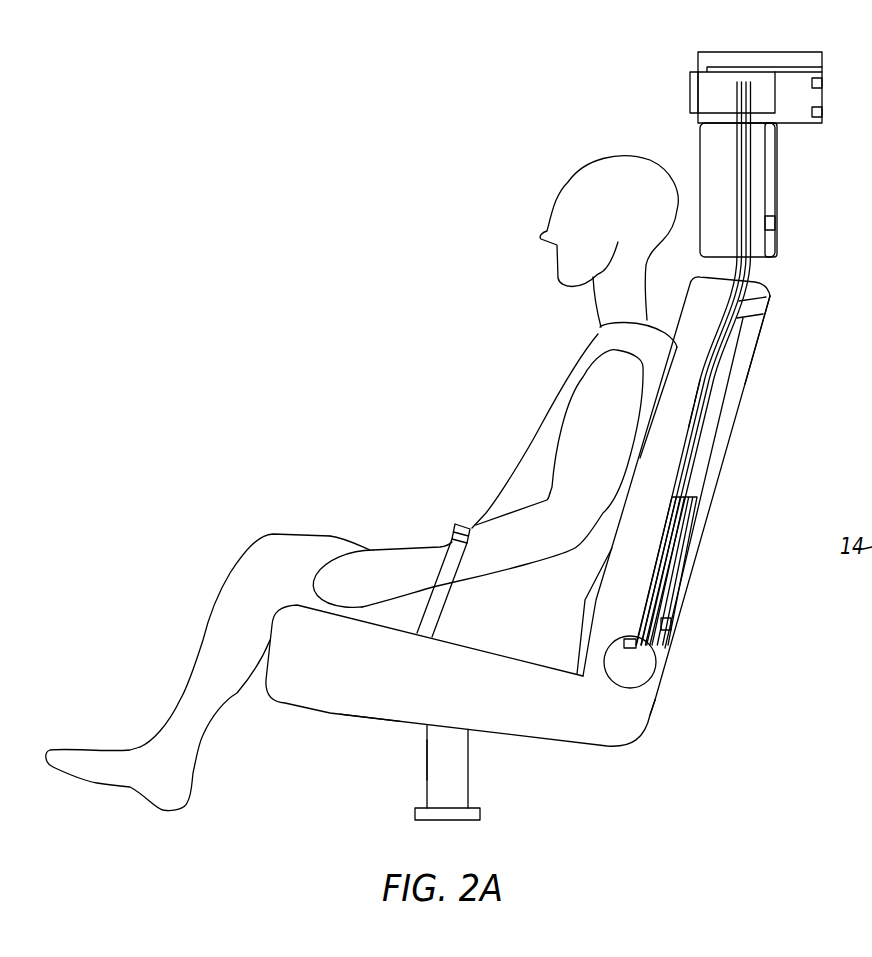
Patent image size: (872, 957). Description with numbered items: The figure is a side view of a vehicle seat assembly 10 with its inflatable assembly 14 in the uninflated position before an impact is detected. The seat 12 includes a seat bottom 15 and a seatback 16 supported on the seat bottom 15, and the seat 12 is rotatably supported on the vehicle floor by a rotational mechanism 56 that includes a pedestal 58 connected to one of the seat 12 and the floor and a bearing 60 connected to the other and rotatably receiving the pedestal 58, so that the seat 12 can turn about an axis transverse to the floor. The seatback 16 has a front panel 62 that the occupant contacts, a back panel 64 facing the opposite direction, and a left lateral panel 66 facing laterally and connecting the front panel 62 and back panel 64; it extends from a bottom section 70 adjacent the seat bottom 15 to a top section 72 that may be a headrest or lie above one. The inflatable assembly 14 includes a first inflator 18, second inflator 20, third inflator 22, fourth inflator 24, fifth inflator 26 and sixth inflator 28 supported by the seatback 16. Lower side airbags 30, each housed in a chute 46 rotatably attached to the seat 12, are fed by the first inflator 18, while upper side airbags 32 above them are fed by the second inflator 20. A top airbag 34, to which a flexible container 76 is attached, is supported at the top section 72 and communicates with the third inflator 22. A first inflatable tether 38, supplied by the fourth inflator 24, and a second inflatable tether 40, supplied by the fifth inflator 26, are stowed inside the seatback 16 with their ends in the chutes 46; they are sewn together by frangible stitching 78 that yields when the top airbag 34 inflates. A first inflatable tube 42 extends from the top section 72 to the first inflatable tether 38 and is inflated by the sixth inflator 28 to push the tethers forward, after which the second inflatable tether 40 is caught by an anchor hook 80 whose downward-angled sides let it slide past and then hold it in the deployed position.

The vehicle seat assembly 10 is at (298, 206).
The seat 12 is at (575, 750).
The inflatable assembly 14 is at (376, 381).
The seat bottom 15 is at (343, 715).
The seatback 16 is at (729, 442).
The first inflator 18 is at (672, 626).
The second inflator 20 is at (777, 230).
The third inflator 22 is at (822, 92).
The fourth inflator 24 is at (636, 652).
The fifth inflator 26 is at (645, 689).
The sixth inflator 28 is at (822, 124).
The lower side airbags 30 is at (686, 551).
The upper side airbags 32 is at (767, 160).
The top airbag 34 is at (741, 67).
The first inflatable tether 38 is at (700, 382).
The second inflatable tether 40 is at (692, 413).
The first inflatable tube 42 is at (716, 114).
The chute 46 is at (713, 477).
The rotational mechanism 56 is at (424, 759).
The pedestal 58 is at (427, 790).
The bearing 60 is at (415, 812).
The front panel 62 is at (681, 312).
The back panel 64 is at (753, 318).
The left lateral panel 66 is at (745, 383).
The bottom section 70 is at (650, 716).
The top section 72 is at (778, 200).
The container 76 is at (690, 80).
The stitching 78 is at (739, 302).
The anchor hook 80 is at (446, 550).